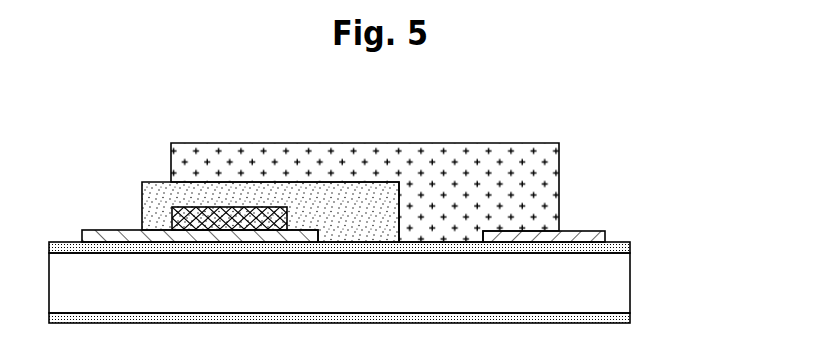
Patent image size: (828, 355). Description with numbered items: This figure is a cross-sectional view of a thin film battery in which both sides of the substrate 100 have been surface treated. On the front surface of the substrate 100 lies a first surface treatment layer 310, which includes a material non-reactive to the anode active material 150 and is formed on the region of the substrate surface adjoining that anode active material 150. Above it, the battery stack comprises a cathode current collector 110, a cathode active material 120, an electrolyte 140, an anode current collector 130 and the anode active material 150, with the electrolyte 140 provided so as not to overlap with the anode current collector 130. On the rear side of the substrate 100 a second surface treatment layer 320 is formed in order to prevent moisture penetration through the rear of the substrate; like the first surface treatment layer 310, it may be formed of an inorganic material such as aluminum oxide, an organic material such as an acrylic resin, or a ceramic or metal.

The substrate 100 is at (620, 285).
The cathode current collector 110 is at (92, 230).
The cathode active material 120 is at (248, 207).
The anode current collector 130 is at (593, 231).
The electrolyte 140 is at (360, 200).
The anode active material 150 is at (502, 160).
The first surface treatment layer 310 is at (620, 249).
The second surface treatment layer 320 is at (620, 319).